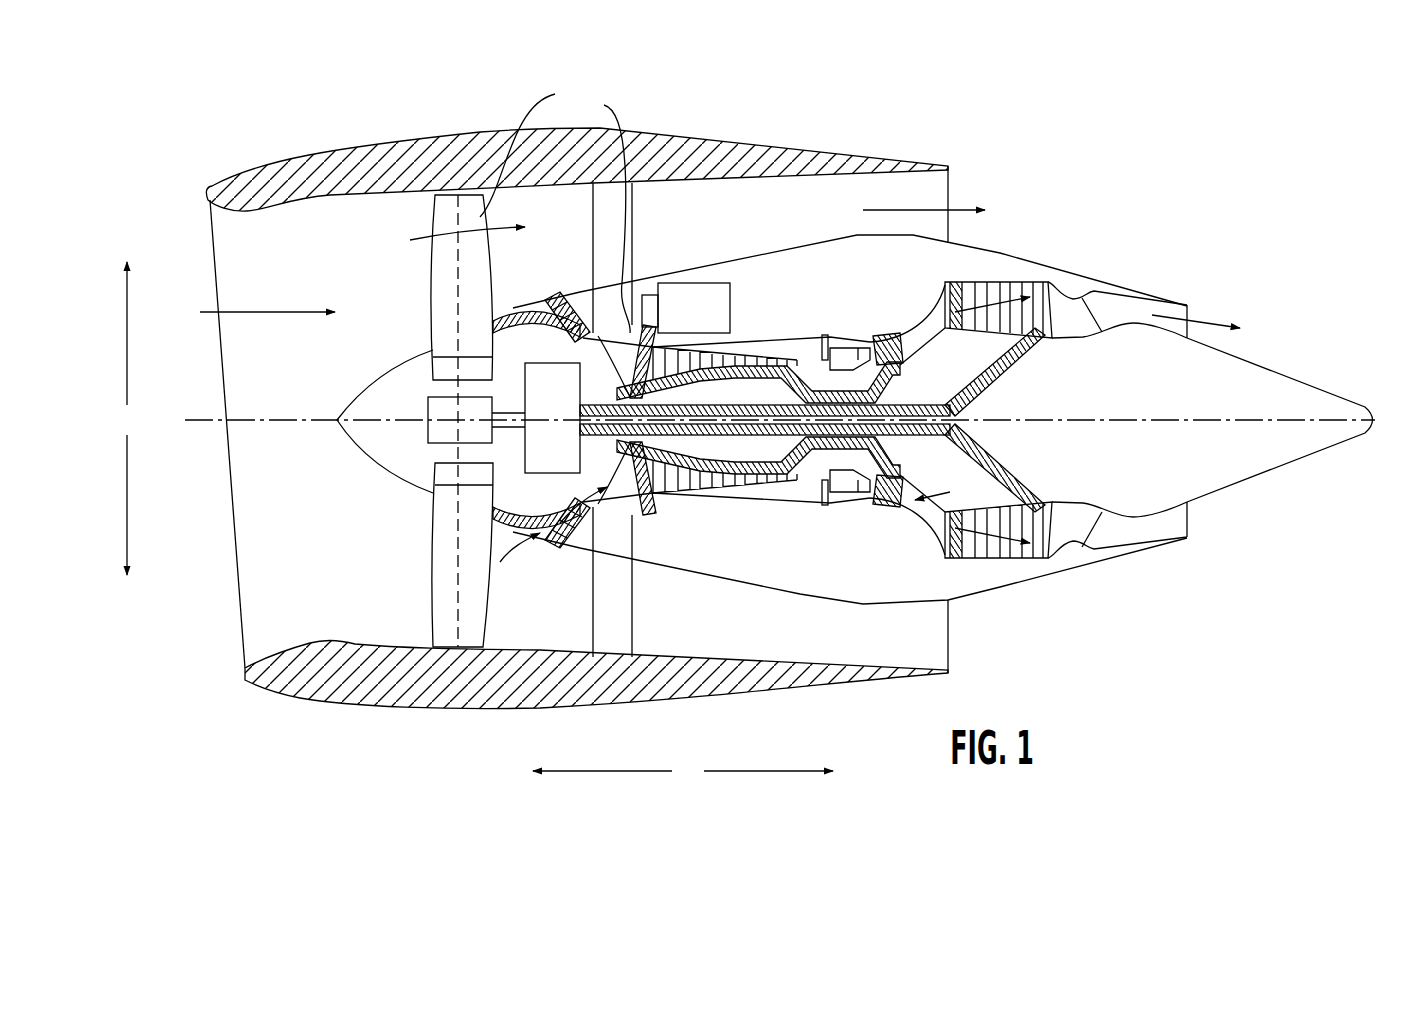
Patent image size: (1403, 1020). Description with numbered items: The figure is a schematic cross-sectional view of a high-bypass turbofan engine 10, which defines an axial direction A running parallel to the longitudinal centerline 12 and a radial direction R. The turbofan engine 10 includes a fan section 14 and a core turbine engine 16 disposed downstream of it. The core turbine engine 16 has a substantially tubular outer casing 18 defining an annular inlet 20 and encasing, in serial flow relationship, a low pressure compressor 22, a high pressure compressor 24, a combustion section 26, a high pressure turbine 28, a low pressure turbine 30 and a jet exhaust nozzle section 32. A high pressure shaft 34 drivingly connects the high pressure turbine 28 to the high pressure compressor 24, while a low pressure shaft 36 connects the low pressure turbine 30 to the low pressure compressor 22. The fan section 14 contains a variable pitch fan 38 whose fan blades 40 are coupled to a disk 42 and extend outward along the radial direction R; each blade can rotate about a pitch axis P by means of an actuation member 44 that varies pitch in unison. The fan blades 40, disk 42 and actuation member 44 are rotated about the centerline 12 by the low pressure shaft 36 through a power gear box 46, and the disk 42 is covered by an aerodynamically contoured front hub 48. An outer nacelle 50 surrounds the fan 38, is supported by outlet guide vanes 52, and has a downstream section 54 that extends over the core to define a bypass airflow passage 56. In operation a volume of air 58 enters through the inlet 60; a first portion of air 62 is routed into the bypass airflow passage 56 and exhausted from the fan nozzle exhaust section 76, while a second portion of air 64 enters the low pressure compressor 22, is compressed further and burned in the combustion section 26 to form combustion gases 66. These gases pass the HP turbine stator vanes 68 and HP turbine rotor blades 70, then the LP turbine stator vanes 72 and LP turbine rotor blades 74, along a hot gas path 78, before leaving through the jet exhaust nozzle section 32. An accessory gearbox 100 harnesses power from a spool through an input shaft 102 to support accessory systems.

The turbofan engine 10 is at (1083, 166).
The longitudinal centerline 12 is at (1123, 420).
The fan section 14 is at (387, 214).
The core turbine engine 16 is at (759, 300).
The outer casing 18 is at (790, 597).
The annular inlet 20 is at (500, 562).
The low pressure compressor 22 is at (605, 497).
The high pressure compressor 24 is at (663, 489).
The combustion section 26 is at (843, 496).
The high pressure turbine 28 is at (952, 502).
The low pressure turbine 30 is at (1037, 556).
The jet exhaust nozzle section 32 is at (1097, 536).
The high pressure shaft 34 is at (872, 386).
The low pressure shaft 36 is at (965, 398).
The variable pitch fan 38 is at (388, 483).
The fan blades 40 is at (433, 580).
The disk 42 is at (448, 367).
The actuation member 44 is at (428, 400).
The power gear box 46 is at (568, 382).
The front hub 48 is at (343, 437).
The outer nacelle 50 is at (480, 712).
The outlet guide vanes 52 is at (632, 225).
The downstream section 54 is at (937, 165).
The bypass airflow passage 56 is at (788, 228).
The volume of air 58 is at (265, 312).
The inlet 60 is at (245, 645).
The first portion of air 62 is at (447, 243).
The second portion of air 64 is at (520, 300).
The combustion gases 66 is at (885, 347).
The HP turbine stator vanes 68 is at (862, 497).
The HP turbine rotor blades 70 is at (935, 464).
The LP turbine stator vanes 72 is at (953, 525).
The LP turbine rotor blades 74 is at (988, 590).
The fan nozzle exhaust section 76 is at (940, 205).
The hot gas path 78 is at (935, 322).
The accessory gearbox 100 is at (712, 283).
The input shaft 102 is at (609, 203).
The pitch axis P is at (526, 146).
The radial direction R is at (127, 418).
The axial direction A is at (683, 772).